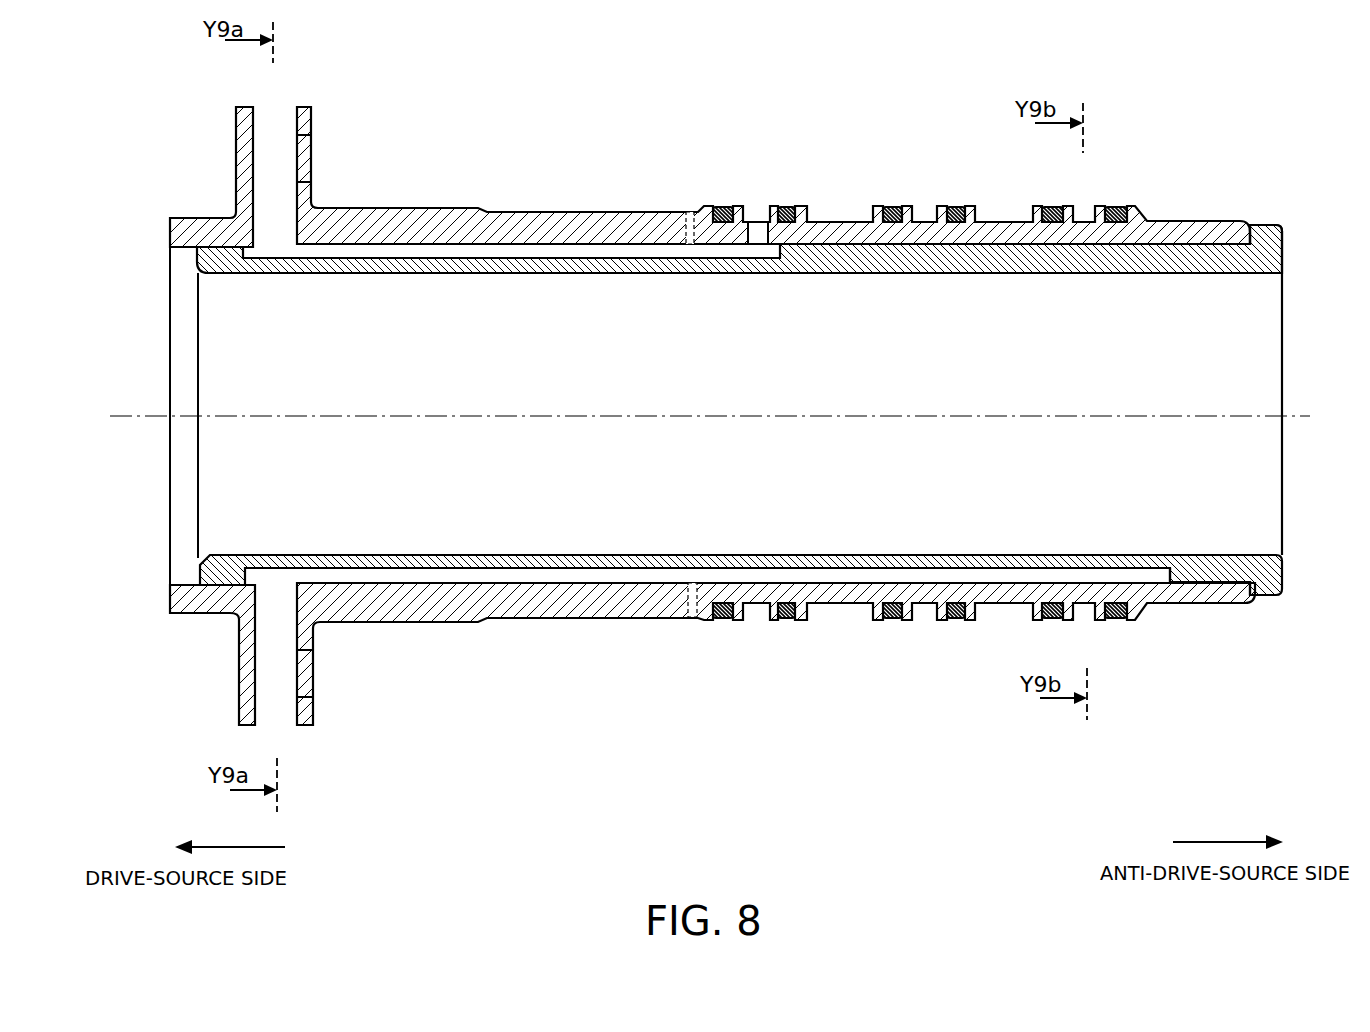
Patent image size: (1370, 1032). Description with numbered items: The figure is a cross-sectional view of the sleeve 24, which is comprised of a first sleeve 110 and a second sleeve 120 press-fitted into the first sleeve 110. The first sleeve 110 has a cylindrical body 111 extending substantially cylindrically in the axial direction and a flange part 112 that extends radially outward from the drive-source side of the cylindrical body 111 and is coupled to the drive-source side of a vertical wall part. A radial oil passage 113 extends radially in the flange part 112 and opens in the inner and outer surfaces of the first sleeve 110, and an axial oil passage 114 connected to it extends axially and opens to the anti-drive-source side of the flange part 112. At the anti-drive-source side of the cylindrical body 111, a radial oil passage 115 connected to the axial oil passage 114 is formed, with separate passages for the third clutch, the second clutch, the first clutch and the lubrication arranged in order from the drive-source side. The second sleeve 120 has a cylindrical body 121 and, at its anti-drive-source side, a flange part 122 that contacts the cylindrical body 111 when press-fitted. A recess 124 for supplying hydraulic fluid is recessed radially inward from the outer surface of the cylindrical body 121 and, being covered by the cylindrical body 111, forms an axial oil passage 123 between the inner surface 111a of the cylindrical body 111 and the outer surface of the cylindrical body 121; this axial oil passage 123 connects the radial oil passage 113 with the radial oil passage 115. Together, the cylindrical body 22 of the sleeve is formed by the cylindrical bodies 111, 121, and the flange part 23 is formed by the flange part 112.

The cylindrical body 22 is at (200, 250).
The flange part 23 is at (234, 172).
The sleeve 24 is at (465, 176).
The first sleeve 110 is at (306, 128).
The cylindrical body 111 is at (428, 216).
The inner surface 111a is at (498, 244).
The flange part 112 is at (234, 124).
The radial oil passage 113 is at (259, 132).
The axial oil passage 114 is at (306, 165).
The radial oil passage 115 is at (829, 220).
The second sleeve 120 is at (373, 275).
The cylindrical body 121 is at (460, 275).
The flange part 122 is at (1262, 226).
The axial oil passage 123 is at (550, 262).
The recess for supplying hydraulic fluid 124 is at (600, 252).